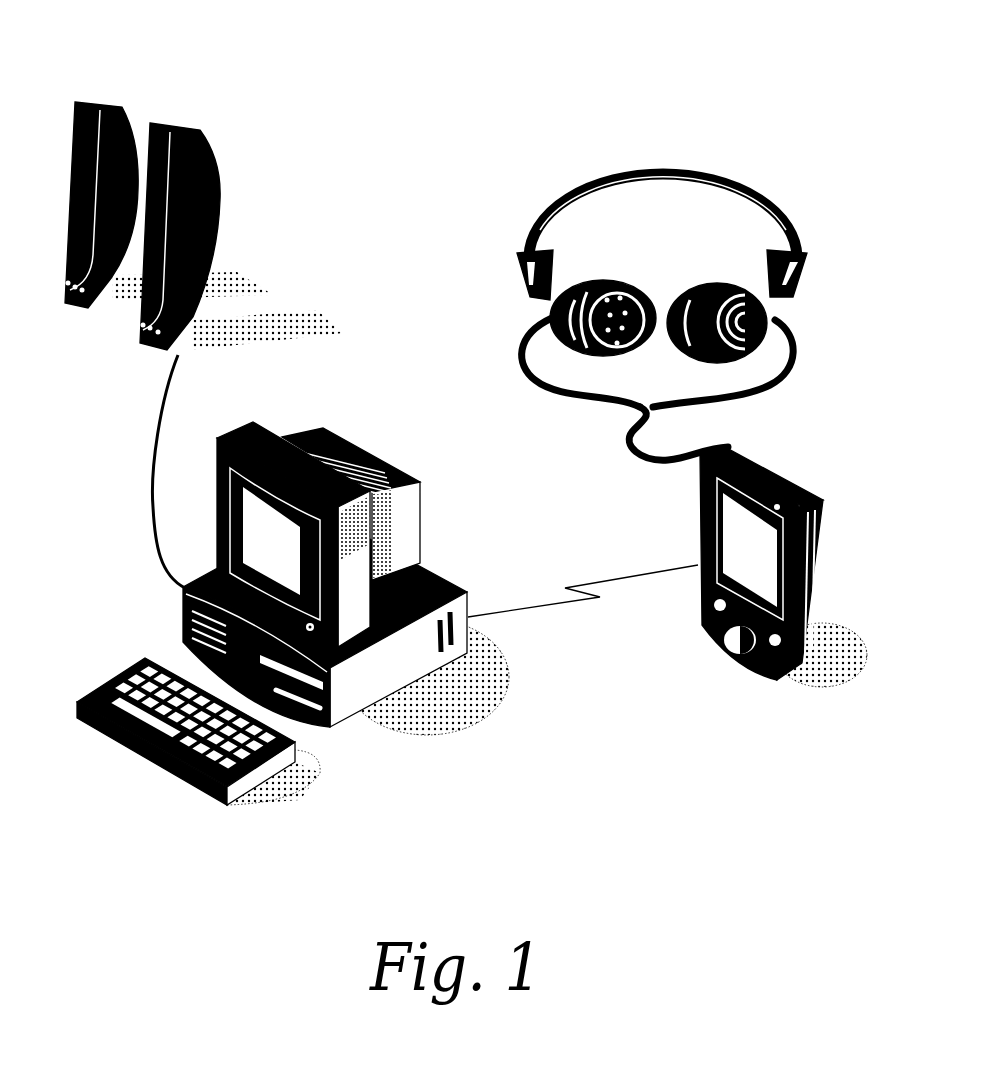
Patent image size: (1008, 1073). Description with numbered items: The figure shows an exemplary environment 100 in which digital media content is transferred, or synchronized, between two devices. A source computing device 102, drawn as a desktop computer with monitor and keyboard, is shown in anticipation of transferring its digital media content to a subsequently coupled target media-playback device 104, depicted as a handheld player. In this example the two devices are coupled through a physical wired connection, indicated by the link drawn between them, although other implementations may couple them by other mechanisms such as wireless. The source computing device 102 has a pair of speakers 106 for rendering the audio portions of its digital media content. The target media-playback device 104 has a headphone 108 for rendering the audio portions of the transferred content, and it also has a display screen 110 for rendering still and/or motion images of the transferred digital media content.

The environment 100 is at (552, 58).
The source computing device 102 is at (440, 577).
The target media-playback device 104 is at (707, 647).
The speakers 106 is at (193, 130).
The headphone 108 is at (513, 267).
The display screen 110 is at (709, 549).